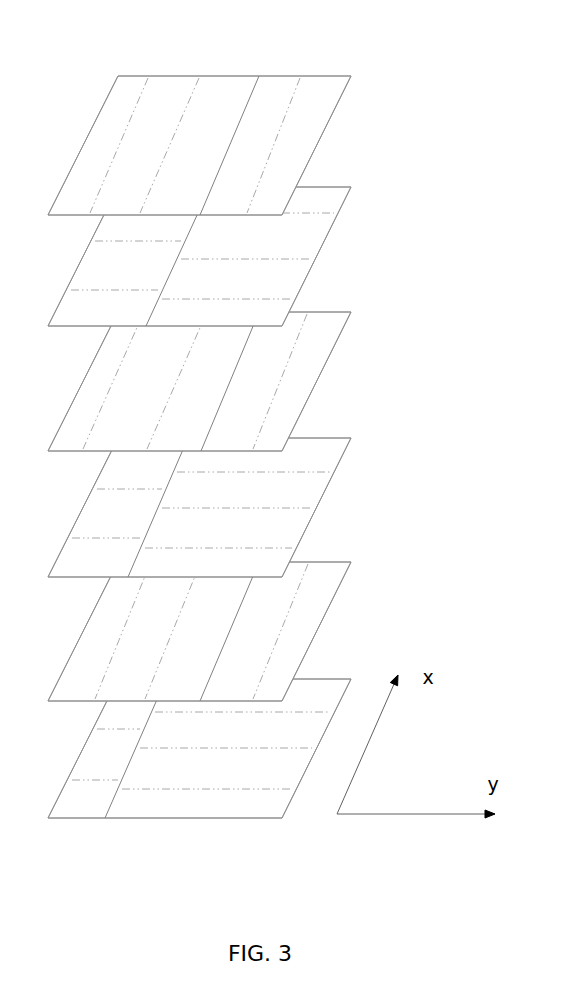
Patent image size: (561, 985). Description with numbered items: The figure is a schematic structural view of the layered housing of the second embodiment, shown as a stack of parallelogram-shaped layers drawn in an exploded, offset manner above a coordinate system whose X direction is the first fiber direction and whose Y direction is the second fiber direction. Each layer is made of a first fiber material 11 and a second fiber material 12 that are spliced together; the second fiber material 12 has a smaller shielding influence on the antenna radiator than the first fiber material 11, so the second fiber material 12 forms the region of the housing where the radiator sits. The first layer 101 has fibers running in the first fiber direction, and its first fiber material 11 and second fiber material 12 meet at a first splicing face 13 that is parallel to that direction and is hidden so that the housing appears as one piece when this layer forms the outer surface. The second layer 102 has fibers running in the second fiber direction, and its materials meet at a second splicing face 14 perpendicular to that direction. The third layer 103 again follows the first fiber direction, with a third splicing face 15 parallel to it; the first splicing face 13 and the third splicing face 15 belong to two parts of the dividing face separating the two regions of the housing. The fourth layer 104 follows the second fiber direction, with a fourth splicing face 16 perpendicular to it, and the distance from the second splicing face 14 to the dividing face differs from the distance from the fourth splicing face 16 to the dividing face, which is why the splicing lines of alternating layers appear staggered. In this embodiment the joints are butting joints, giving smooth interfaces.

The first layer 101 is at (168, 76).
The second layer 102 is at (330, 187).
The third layer 103 is at (320, 311).
The fourth layer 104 is at (340, 460).
The first fiber material 11 is at (118, 144).
The second fiber material 12 is at (308, 122).
The first splicing face 13 is at (253, 97).
The second splicing face 14 is at (152, 308).
The third splicing face 15 is at (240, 368).
The fourth splicing face 16 is at (135, 556).